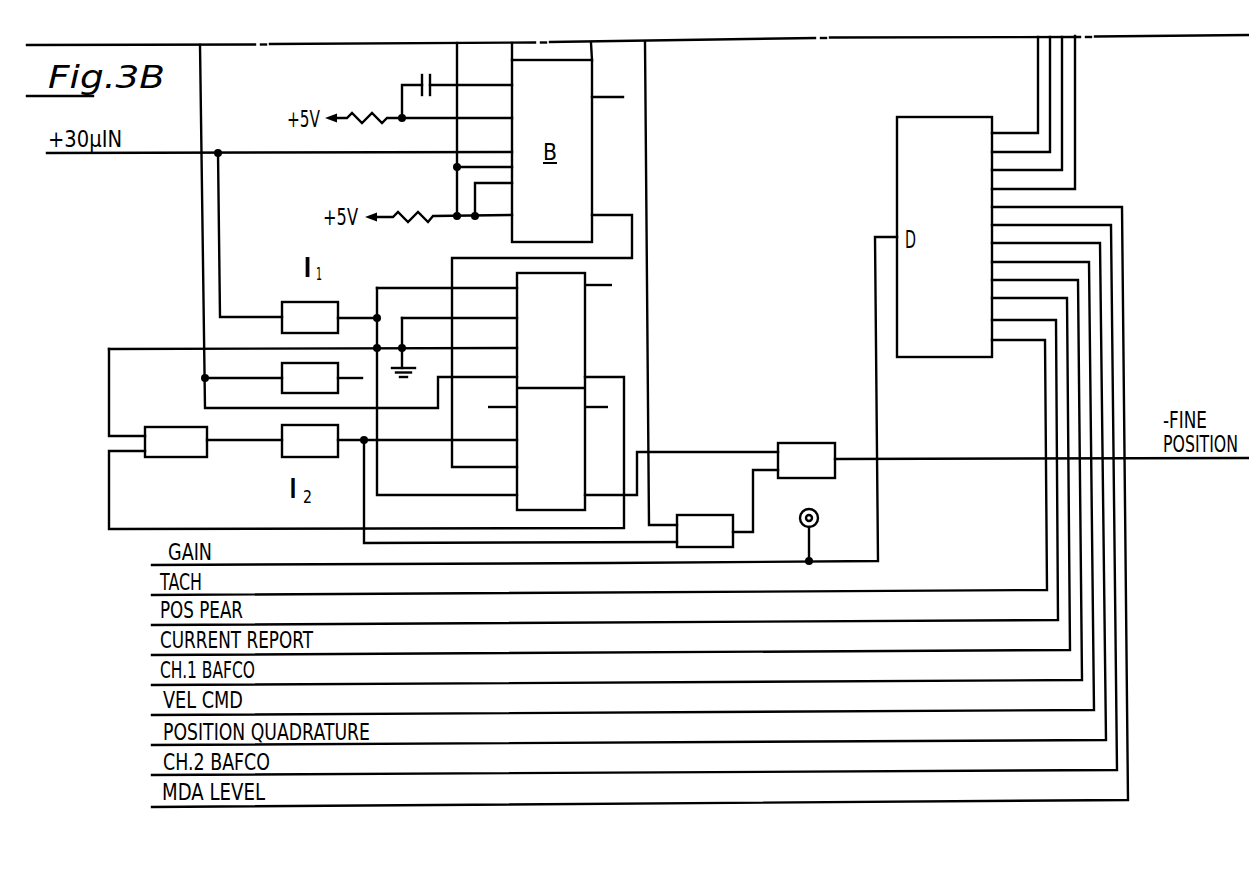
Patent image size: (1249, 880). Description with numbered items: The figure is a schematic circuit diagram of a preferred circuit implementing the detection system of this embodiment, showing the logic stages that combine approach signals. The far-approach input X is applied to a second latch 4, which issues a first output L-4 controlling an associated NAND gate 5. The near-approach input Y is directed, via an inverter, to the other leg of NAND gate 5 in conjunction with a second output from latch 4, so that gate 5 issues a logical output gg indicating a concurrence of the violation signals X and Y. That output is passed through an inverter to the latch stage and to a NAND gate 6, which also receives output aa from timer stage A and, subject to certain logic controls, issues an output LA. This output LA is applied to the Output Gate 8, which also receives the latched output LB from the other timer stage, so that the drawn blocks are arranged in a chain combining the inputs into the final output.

The second latch 4 is at (585, 331).
The NAND gate 5 is at (168, 458).
The NAND gate 6 is at (705, 515).
The output gate 8 is at (799, 443).